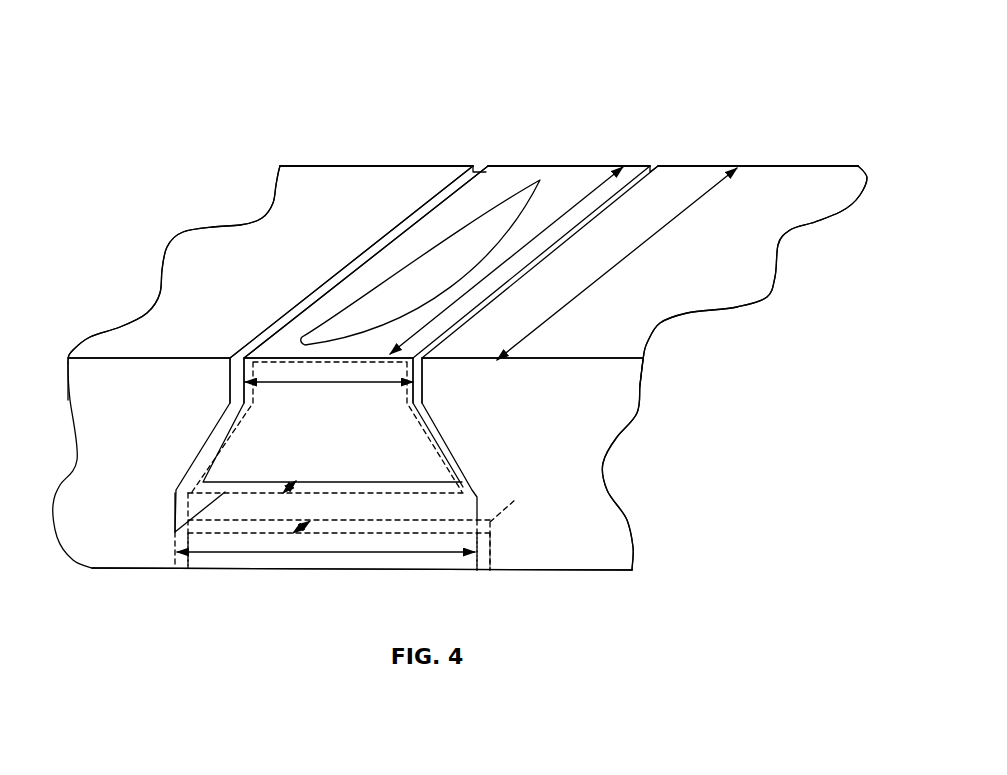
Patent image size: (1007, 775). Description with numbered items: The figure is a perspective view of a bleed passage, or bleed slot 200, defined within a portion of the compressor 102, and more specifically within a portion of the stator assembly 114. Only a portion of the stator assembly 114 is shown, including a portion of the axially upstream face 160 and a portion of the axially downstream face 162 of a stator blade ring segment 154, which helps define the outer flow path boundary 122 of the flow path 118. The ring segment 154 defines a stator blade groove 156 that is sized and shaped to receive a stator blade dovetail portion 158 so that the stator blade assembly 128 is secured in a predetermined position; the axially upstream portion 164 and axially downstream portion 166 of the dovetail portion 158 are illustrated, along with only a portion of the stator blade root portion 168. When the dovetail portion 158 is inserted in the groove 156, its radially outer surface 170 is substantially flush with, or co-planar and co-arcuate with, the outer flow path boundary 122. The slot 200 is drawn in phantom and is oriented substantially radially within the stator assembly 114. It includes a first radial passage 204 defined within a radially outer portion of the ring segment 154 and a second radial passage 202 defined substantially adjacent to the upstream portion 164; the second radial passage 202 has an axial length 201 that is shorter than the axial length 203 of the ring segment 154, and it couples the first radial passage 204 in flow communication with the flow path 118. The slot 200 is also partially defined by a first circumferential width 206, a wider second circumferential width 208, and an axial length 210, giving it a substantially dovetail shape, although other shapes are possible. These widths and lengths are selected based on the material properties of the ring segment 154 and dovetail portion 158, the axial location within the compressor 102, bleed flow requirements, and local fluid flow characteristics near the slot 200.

The compressor 102 is at (170, 80).
The stator assembly 114 is at (292, 130).
The flow path 118 is at (772, 125).
The outer flow path boundary 122 is at (318, 203).
The stator blade assembly 128 is at (523, 148).
The stator blade ring segment 154 is at (126, 404).
The stator blade groove 156 is at (187, 507).
The stator blade dovetail portion 158 is at (369, 277).
The axially upstream face 160 is at (590, 440).
The axially downstream face 162 is at (412, 157).
The axially upstream portion 164 is at (240, 340).
The axially downstream portion 166 is at (620, 150).
The stator blade root portion 168 is at (540, 181).
The radially outer surface 170 is at (458, 221).
The bleed slot 200 is at (177, 580).
The axial length 201 is at (608, 181).
The second radial passage 202 is at (404, 448).
The axial length 203 is at (701, 196).
The first radial passage 204 is at (441, 561).
The first circumferential width 206 is at (332, 385).
The second circumferential width 208 is at (237, 556).
The axial length 210 is at (288, 485).